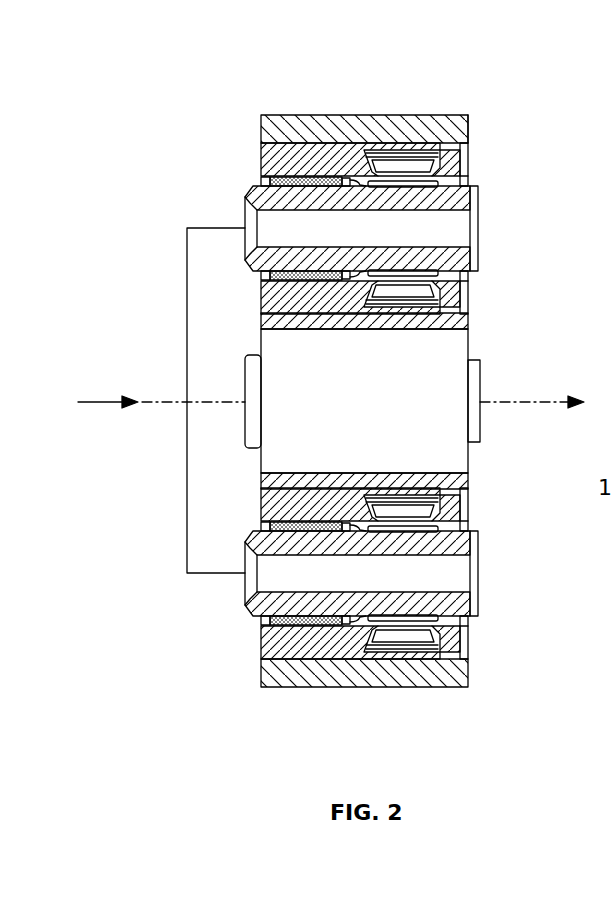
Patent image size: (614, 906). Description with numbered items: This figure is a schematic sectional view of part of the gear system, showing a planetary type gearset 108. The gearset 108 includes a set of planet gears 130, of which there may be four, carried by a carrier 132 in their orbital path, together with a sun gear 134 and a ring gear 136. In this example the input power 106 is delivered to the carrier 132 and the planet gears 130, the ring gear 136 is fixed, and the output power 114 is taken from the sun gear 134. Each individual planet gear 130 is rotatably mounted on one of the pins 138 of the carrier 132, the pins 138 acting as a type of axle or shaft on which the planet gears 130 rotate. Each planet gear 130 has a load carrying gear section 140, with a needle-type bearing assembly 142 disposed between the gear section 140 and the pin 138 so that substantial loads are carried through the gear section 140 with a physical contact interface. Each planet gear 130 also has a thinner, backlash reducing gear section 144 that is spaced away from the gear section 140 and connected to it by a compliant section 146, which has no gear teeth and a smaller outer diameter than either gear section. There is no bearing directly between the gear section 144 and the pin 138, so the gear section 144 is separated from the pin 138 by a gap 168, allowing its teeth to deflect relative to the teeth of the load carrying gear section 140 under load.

The gearset 108 is at (500, 40).
The planet gears 130 is at (298, 141).
The gear section 140 is at (332, 152).
The gear section 144 is at (452, 150).
The compliant section 146 is at (391, 170).
The ring gear 136 is at (468, 130).
The gap 168 is at (470, 183).
The pins 138 is at (472, 195).
The bearing assembly 142 is at (302, 184).
The sun gear 134 is at (463, 320).
The input power 106 is at (97, 400).
The output power 114 is at (550, 400).
The carrier 132 is at (214, 575).